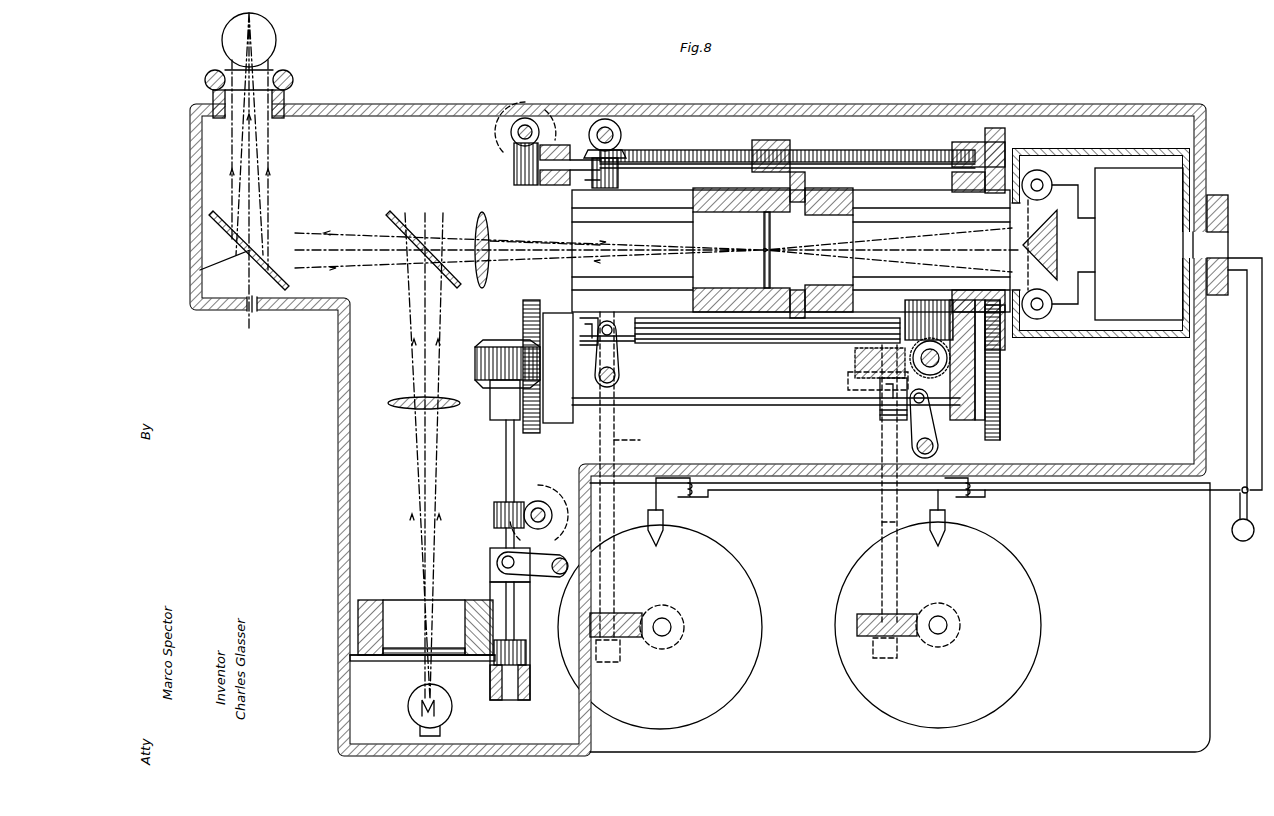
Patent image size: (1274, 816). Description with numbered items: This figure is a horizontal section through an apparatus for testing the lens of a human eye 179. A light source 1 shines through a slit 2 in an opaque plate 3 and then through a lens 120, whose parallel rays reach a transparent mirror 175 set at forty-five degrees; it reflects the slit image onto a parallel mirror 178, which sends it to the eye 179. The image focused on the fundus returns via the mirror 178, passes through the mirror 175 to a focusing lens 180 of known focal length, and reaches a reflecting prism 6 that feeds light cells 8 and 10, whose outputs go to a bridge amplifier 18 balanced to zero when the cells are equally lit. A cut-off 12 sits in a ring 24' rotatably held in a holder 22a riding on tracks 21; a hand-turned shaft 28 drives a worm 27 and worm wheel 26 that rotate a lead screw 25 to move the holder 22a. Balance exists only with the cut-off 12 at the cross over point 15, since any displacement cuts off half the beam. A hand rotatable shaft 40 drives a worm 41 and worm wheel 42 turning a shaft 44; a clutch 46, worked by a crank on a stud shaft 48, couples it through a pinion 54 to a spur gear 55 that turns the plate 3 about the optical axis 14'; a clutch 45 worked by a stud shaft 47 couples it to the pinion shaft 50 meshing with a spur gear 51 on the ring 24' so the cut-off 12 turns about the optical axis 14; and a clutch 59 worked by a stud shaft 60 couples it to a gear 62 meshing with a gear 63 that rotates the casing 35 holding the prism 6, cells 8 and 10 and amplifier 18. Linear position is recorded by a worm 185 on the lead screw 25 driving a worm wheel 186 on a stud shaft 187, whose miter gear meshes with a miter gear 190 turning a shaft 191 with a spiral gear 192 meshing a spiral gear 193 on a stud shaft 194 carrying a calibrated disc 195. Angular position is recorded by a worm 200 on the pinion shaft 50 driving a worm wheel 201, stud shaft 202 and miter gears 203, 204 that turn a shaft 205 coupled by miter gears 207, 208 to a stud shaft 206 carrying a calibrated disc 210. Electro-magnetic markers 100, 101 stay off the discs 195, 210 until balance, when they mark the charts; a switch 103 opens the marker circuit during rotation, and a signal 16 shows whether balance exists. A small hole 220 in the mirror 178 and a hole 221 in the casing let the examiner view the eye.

The light source 1 is at (453, 706).
The slit 2 is at (425, 652).
The opaque plate 3 is at (468, 657).
The reflecting prism 6 is at (1057, 247).
The light cell 8 is at (1046, 183).
The light cell 10 is at (1037, 320).
The cut-off 12 is at (769, 238).
The optical axis 14 is at (545, 268).
The optical axis 14' is at (407, 456).
The cross over point 15 is at (765, 251).
The signal 16 is at (1243, 541).
The bridge amplifier 18 is at (1140, 322).
The tracks 21 is at (905, 188).
The holder 22a is at (791, 150).
The ring 24' is at (829, 250).
The lead screw 25 is at (787, 153).
The worm wheel 26 is at (513, 165).
The worm 27 is at (497, 130).
The shaft 28 is at (527, 125).
The casing 35 is at (1096, 340).
The hand rotatable shaft 40 is at (545, 503).
The worm 41 is at (537, 506).
The worm wheel 42 is at (498, 510).
The shaft 44 is at (506, 441).
The clutch 45 is at (622, 348).
The clutch 46 is at (493, 561).
The stud shaft 47 is at (620, 377).
The stud shaft 48 is at (558, 576).
The pinion shaft 50 is at (763, 341).
The spur gear 51 is at (832, 158).
The pinion 54 is at (526, 660).
The spur gear 55 is at (372, 656).
The clutch 59 is at (880, 418).
The stud shaft 60 is at (938, 447).
The gear 62 is at (1002, 428).
The gear 63 is at (1003, 360).
The recording marker 100 is at (933, 518).
The recording marker 101 is at (652, 518).
The manually operable switch 103 is at (1240, 488).
The lens 120 is at (396, 408).
The transparent mirror 175 is at (396, 216).
The mirror 178 is at (215, 222).
The human eye 179 is at (277, 38).
The focusing lens 180 is at (480, 214).
The worm 185 is at (586, 178).
The worm wheel 186 is at (622, 136).
The stud shaft 187 is at (612, 121).
The miter gear 190 is at (622, 160).
The shaft 191 is at (640, 441).
The spiral gear 192 is at (638, 648).
The spiral gear 193 is at (686, 627).
The stud shaft 194 is at (668, 631).
The calibrated disc 195 is at (718, 702).
The worm 200 is at (920, 318).
The worm wheel 201 is at (935, 364).
The stud shaft 202 is at (938, 372).
The miter gear 203 is at (880, 378).
The miter gear 204 is at (855, 366).
The shaft 205 is at (882, 522).
The stud shaft 206 is at (947, 626).
The miter gear 207 is at (910, 645).
The miter gear 208 is at (958, 640).
The calibrated disc 210 is at (1040, 583).
The hole 220 is at (200, 270).
The hole 221 is at (250, 308).